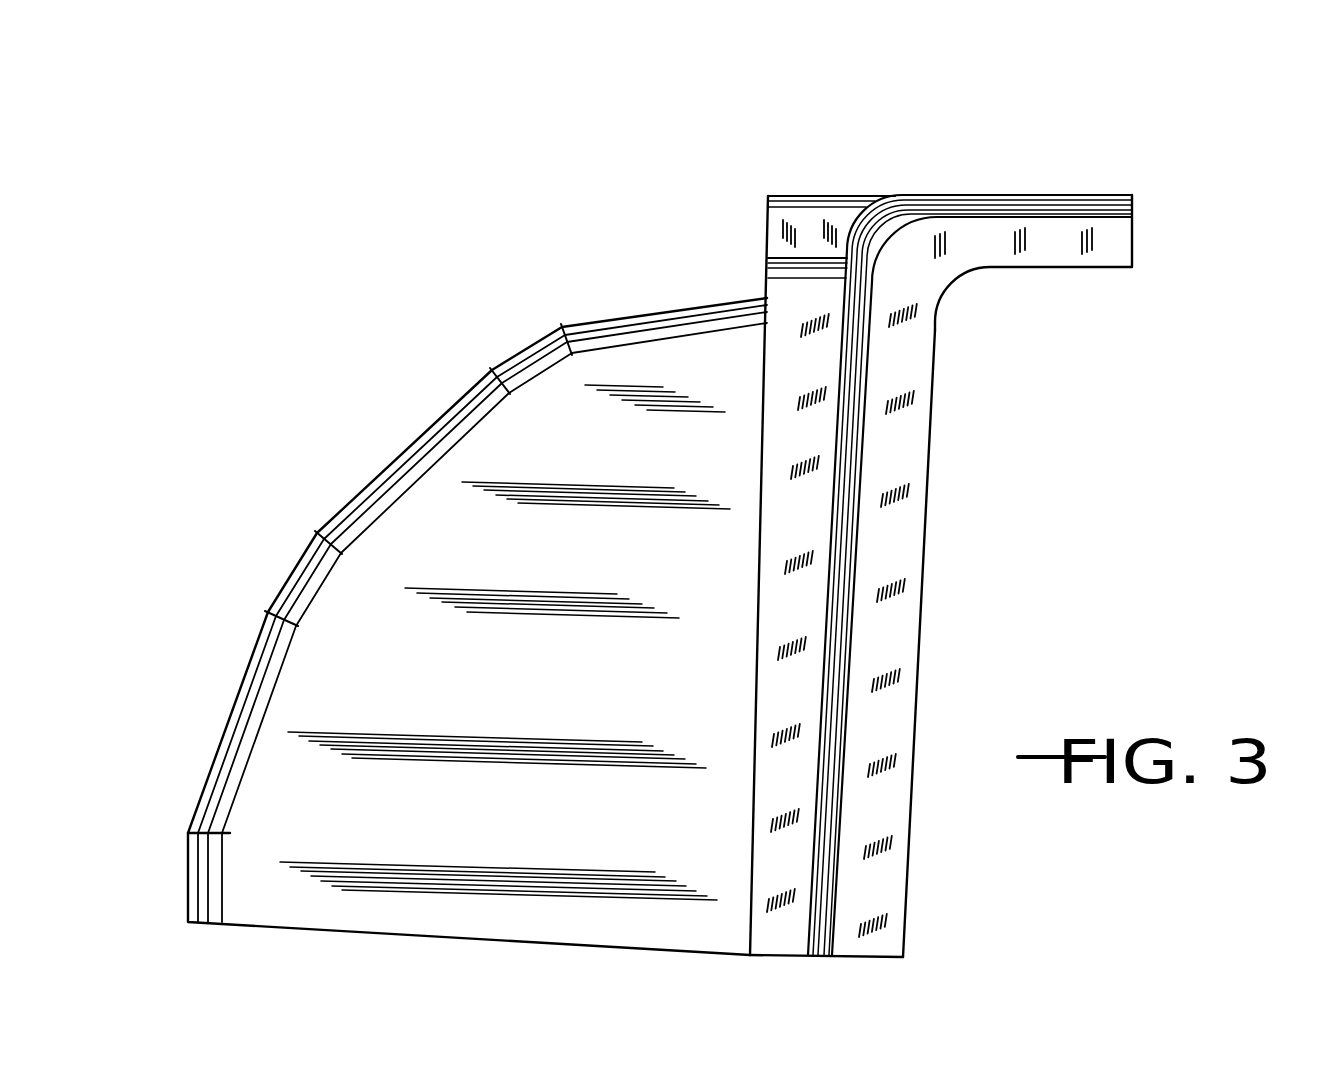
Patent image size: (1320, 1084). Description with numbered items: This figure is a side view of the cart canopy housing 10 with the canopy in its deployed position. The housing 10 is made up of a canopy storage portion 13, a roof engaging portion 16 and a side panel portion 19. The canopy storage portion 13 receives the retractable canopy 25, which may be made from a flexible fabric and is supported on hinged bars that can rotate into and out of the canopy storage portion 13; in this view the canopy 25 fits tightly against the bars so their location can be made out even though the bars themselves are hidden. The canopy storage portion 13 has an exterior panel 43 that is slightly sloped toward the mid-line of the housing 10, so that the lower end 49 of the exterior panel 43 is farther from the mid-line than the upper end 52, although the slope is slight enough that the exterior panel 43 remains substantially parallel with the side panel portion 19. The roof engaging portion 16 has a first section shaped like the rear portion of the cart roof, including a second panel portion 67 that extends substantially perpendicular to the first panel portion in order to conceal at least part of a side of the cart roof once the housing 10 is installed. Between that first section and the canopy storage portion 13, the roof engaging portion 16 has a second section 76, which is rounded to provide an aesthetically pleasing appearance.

The cart canopy housing 10 is at (963, 120).
The roof engaging portion 16 is at (1158, 184).
The second section 76 is at (902, 198).
The second panel portion 67 is at (1068, 257).
The upper end 52 is at (818, 327).
The canopy storage portion 13 is at (812, 525).
The side panel portion 19 is at (928, 597).
The exterior panel 43 is at (766, 640).
The retractable canopy 25 is at (242, 698).
The lower end 49 is at (804, 951).